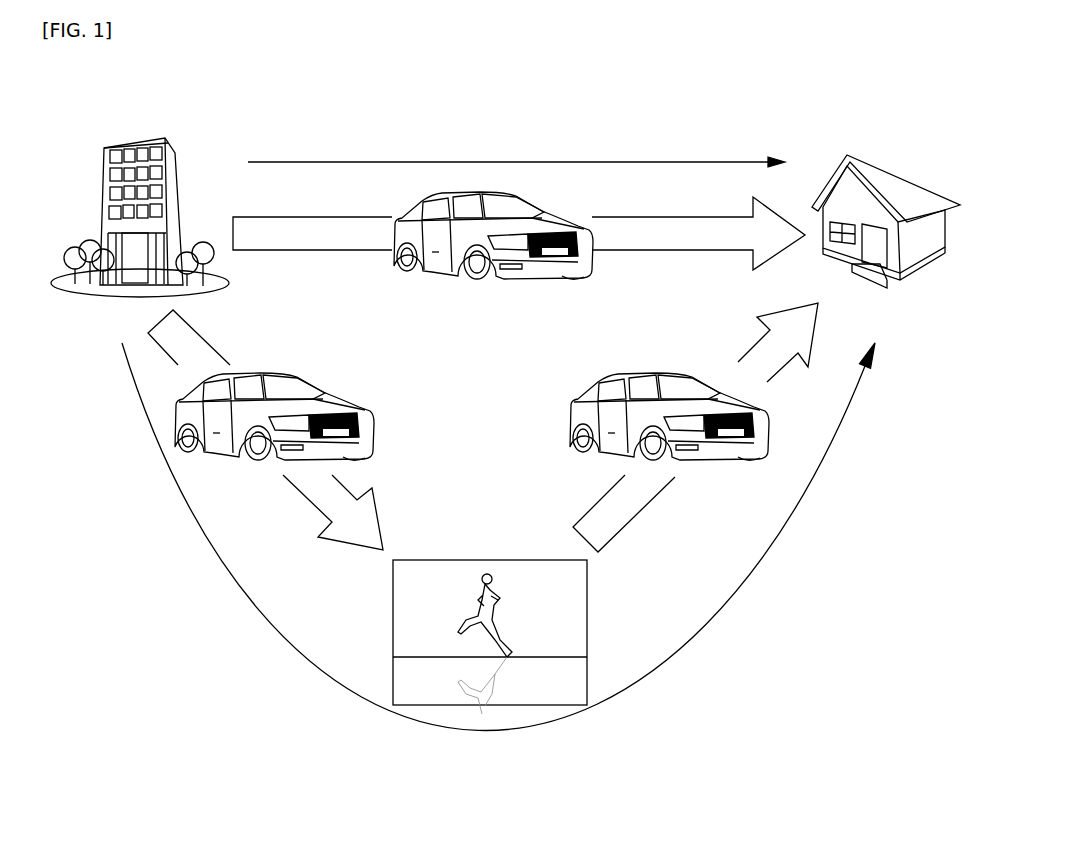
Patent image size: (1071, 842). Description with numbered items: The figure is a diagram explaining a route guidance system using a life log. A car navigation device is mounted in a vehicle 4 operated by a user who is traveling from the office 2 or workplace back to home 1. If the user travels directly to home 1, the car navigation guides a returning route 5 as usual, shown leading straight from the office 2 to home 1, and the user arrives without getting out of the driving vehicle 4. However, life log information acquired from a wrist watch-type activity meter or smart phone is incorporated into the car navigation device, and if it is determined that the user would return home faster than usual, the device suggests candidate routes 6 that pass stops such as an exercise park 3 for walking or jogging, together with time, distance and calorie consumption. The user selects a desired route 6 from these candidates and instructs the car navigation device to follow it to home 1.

The home 1 is at (883, 145).
The office 2 is at (178, 133).
The exercise park 3 is at (587, 620).
The vehicle 4 is at (332, 382).
The returning route 5 is at (516, 150).
The route 6 is at (498, 554).